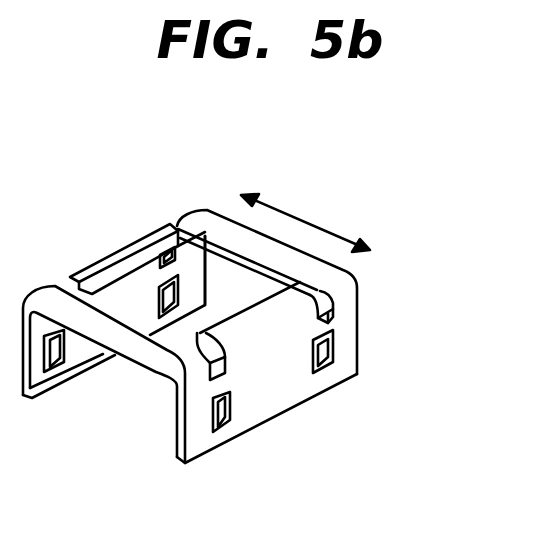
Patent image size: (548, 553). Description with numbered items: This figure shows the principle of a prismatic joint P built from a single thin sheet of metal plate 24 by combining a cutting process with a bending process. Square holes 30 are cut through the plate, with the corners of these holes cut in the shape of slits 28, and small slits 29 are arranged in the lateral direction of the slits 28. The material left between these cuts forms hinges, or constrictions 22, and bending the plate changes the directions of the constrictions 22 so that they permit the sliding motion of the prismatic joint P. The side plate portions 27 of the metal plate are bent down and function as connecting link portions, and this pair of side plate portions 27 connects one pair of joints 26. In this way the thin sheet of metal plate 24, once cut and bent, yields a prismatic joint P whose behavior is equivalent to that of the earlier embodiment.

The hinges (constrictions) 22 is at (226, 386).
The thin sheet of metal plate 24 is at (350, 317).
The pair of joints 26 is at (262, 253).
The side plate portions 27 is at (93, 262).
The slits 28 is at (333, 297).
The small slits 29 is at (335, 352).
The square holes 30 is at (217, 264).
The prismatic joint P is at (324, 227).